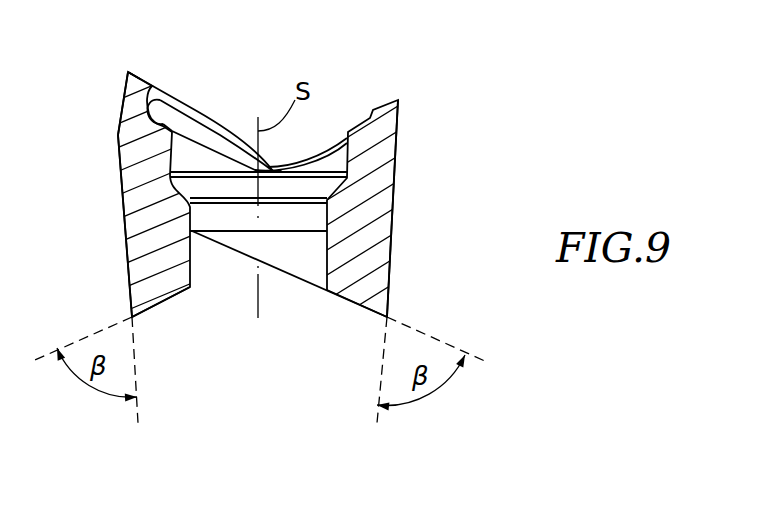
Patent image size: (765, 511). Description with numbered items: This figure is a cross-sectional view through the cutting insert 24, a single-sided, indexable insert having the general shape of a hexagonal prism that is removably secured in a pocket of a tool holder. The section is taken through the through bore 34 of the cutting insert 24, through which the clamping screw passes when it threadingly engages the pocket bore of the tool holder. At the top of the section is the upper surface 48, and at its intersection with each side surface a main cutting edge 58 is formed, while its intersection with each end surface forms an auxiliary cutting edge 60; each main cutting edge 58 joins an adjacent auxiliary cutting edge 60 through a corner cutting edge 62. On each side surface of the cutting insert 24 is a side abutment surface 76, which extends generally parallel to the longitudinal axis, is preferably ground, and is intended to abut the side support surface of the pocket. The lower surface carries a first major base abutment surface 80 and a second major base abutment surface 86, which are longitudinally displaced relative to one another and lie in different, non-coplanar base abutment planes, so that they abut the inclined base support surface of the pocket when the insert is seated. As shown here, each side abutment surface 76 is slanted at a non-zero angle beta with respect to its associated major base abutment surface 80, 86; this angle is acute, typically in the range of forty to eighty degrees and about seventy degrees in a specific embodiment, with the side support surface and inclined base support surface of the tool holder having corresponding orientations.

The cutting insert 24 is at (430, 121).
The through bore 34 is at (196, 237).
The upper surface 48 is at (176, 103).
The main cutting edge 58 is at (127, 78).
The auxiliary cutting edge 60 is at (132, 72).
The corner cutting edge 62 is at (128, 72).
The side abutment surface 76 is at (396, 199).
The first major base abutment surface 80 is at (165, 303).
The second major base abutment surface 86 is at (350, 303).